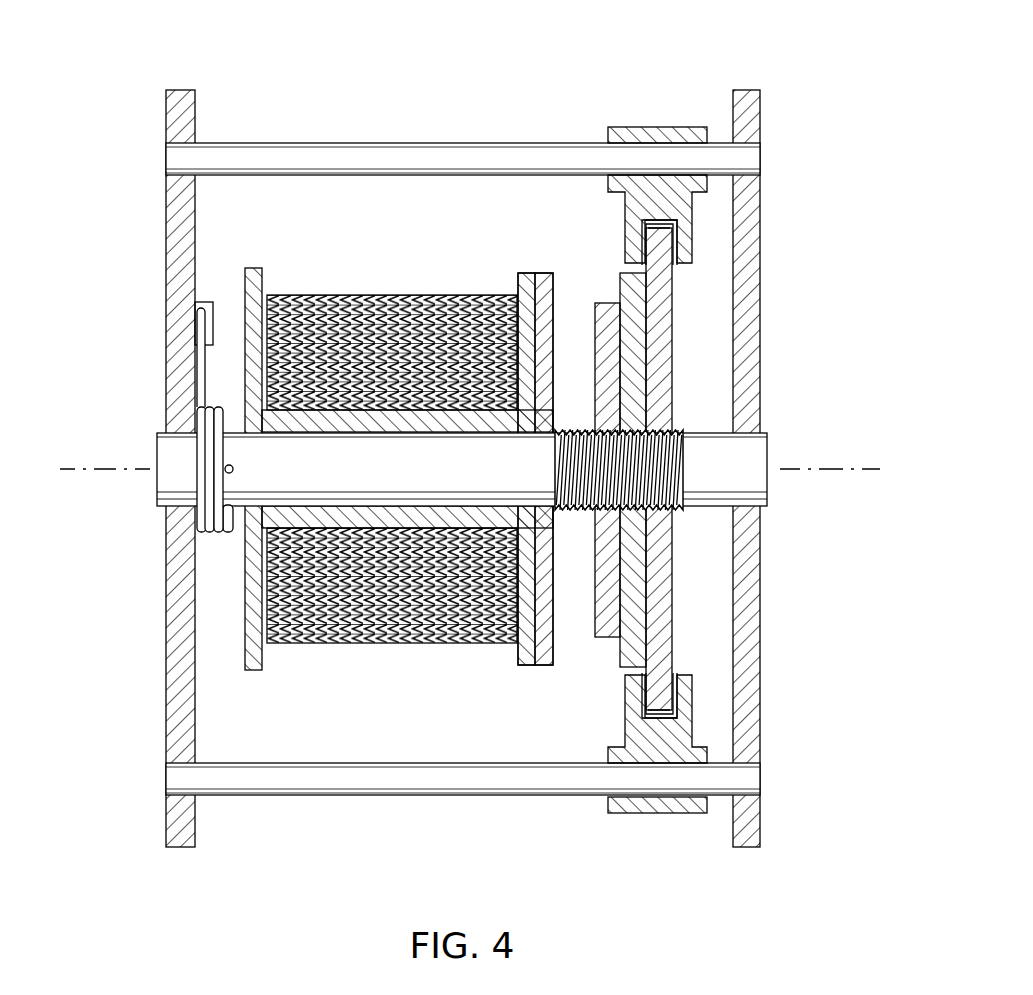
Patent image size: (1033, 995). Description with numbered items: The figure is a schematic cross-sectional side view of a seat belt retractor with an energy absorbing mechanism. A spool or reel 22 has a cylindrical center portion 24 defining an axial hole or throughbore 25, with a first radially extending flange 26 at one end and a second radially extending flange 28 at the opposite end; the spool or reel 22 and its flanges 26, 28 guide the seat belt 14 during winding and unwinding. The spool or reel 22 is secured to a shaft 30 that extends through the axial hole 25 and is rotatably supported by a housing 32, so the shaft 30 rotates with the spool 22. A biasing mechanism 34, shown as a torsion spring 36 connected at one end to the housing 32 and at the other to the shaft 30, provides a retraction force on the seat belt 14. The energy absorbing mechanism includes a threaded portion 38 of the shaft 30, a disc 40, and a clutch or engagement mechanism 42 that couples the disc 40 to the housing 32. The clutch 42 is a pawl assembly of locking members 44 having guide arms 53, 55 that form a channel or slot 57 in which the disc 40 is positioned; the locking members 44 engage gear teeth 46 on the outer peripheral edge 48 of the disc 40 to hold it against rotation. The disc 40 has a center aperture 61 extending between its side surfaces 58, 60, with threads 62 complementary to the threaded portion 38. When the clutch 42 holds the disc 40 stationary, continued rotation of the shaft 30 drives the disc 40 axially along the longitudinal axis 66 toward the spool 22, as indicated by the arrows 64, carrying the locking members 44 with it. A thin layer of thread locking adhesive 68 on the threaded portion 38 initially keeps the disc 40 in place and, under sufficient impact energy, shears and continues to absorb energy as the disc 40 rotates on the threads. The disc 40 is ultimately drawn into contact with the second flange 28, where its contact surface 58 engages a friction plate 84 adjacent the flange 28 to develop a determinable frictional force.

The seat belt 14 is at (450, 293).
The spool or reel 22 is at (256, 674).
The cylindrical center portion 24 is at (370, 430).
The axial hole or throughbore 25 is at (318, 434).
The first radially extending flange 26 is at (255, 272).
The second radially extending flange 28 is at (530, 272).
The shaft 30 is at (165, 478).
The housing 32 is at (166, 708).
The biasing mechanism 34 is at (213, 542).
The torsion spring / energy absorbing mechanism 36 is at (200, 437).
The threaded portion 38 is at (705, 440).
The disc 40 is at (688, 317).
The clutch or engagement mechanism 42 is at (623, 245).
The locking members 44 is at (680, 208).
The gear teeth 46 is at (662, 233).
The outer peripheral edge 48 is at (662, 277).
The guide arm 53 is at (598, 226).
The guide arm 55 is at (690, 243).
The channel or slot 57 is at (653, 228).
The side surface / contact surface 58 is at (589, 470).
The side surface 60 is at (672, 352).
The center aperture 61 is at (675, 513).
The threads 62 is at (658, 432).
The arrows 64 is at (572, 262).
The longitudinal axis 66 is at (858, 468).
The thread locking adhesive 68 is at (565, 432).
The friction plate 84 is at (490, 648).